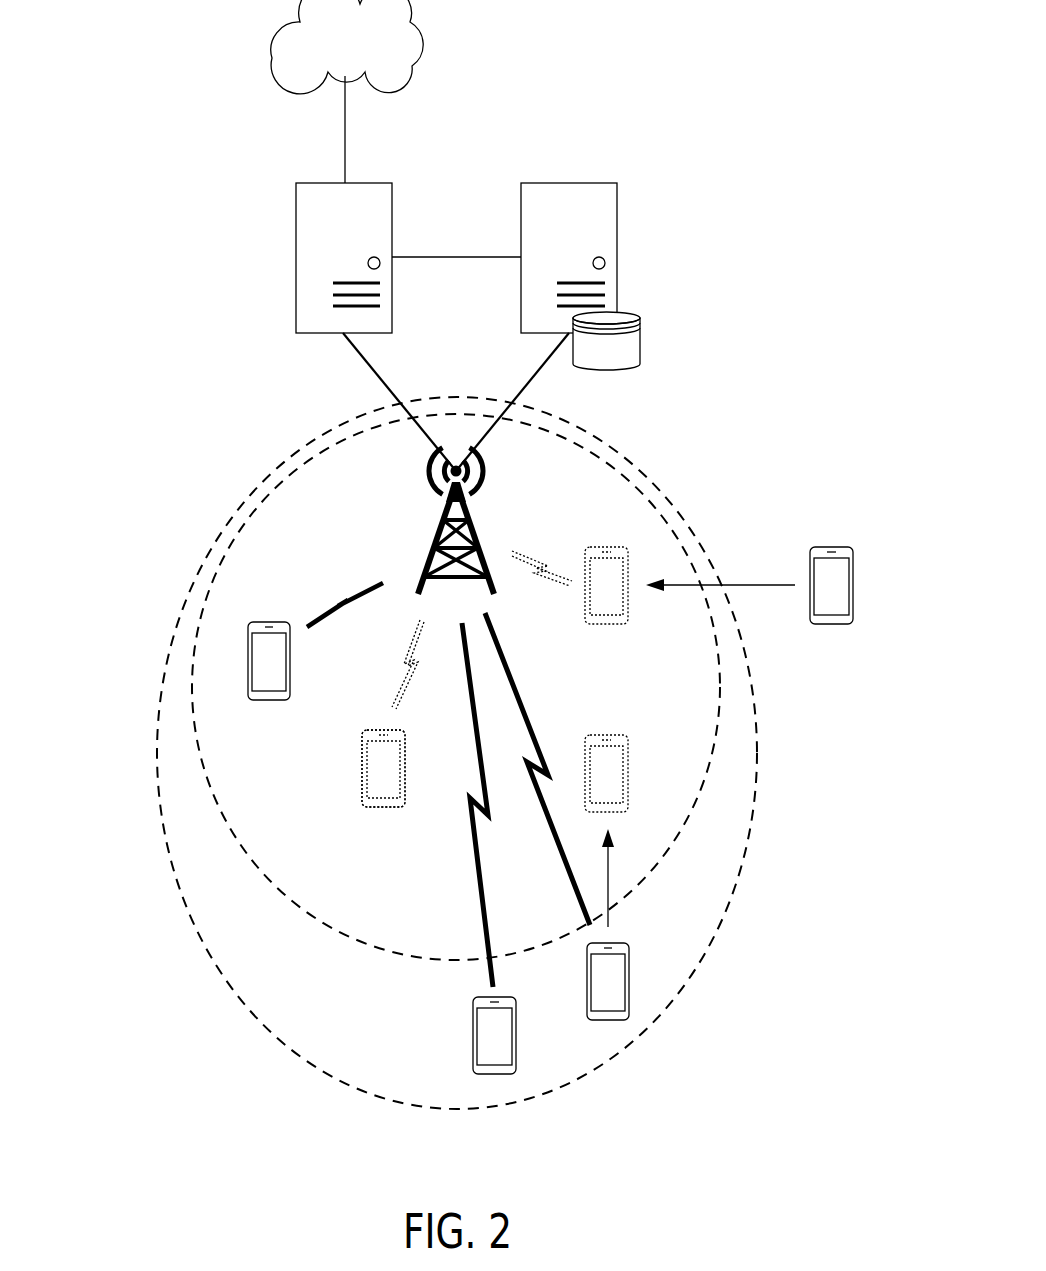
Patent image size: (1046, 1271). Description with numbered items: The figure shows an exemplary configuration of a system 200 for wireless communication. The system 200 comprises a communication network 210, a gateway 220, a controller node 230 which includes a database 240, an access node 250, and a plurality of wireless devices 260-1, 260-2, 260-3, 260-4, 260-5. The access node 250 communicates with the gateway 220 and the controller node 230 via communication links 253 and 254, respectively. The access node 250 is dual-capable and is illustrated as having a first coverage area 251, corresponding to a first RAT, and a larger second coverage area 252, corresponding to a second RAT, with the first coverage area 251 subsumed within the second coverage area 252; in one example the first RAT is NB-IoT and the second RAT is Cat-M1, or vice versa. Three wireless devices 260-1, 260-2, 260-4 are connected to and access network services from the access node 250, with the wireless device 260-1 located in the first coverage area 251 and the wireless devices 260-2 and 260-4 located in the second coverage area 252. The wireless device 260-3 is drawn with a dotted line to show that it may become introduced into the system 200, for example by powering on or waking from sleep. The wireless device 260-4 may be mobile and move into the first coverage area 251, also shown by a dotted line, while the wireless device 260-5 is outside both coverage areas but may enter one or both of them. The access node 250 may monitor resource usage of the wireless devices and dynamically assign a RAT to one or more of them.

The system 200 is at (716, 74).
The communication network 210 is at (420, 30).
The gateway 220 is at (296, 195).
The controller node 230 is at (617, 190).
The database 240 is at (640, 334).
The access node 250 is at (440, 527).
The first coverage area 251 is at (197, 650).
The second coverage area 252 is at (157, 799).
The communication link 253 is at (356, 351).
The communication link 254 is at (535, 373).
The wireless device 260-1 is at (270, 700).
The wireless device 260-2 is at (473, 1035).
The wireless device 260-3 is at (383, 807).
The wireless device 260-4 is at (629, 1003).
The wireless device 260-5 is at (833, 624).